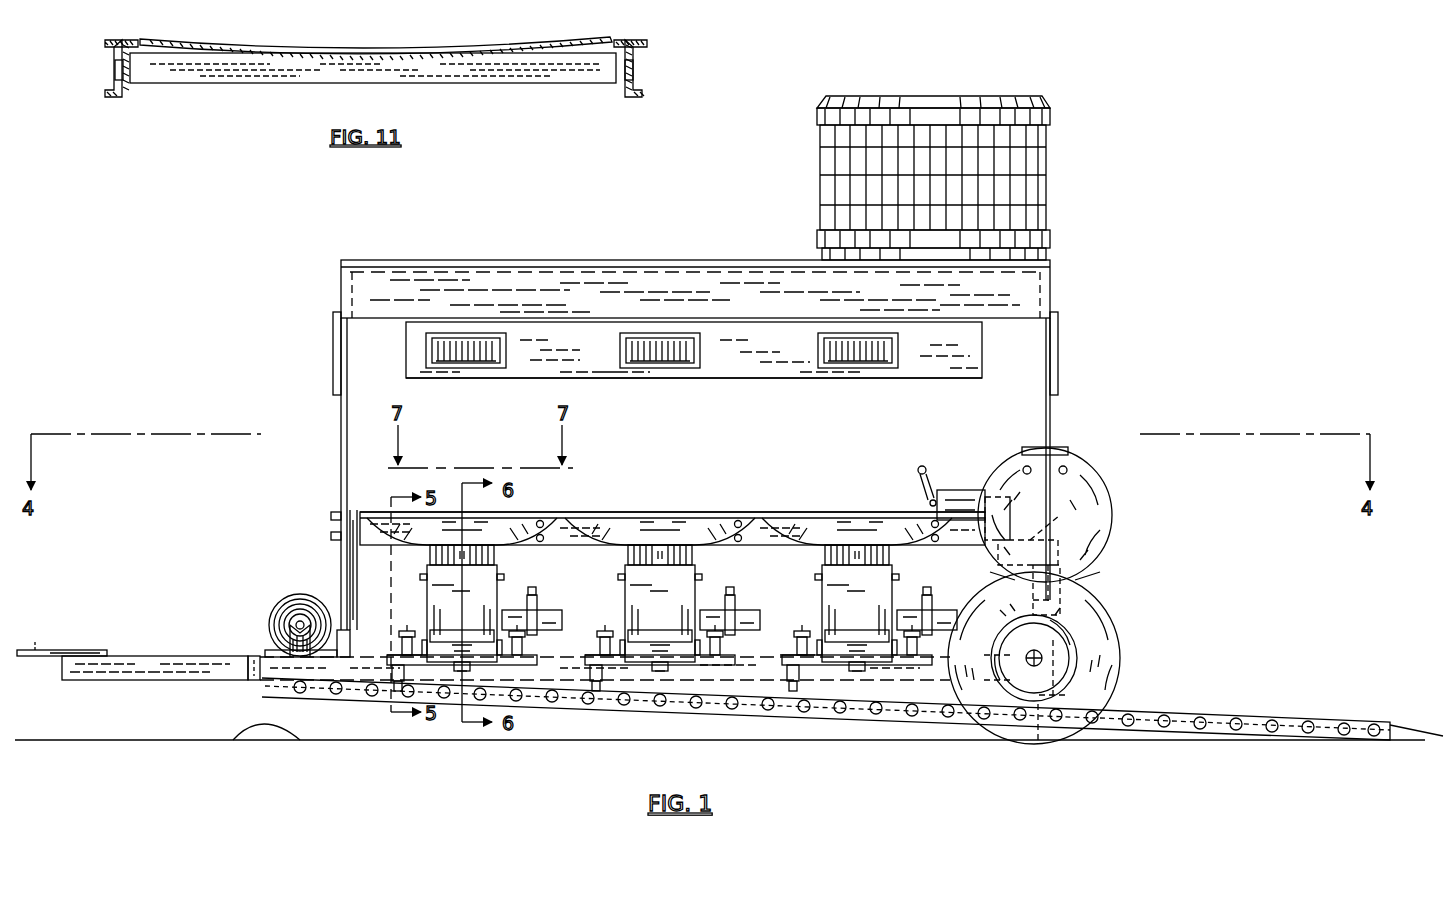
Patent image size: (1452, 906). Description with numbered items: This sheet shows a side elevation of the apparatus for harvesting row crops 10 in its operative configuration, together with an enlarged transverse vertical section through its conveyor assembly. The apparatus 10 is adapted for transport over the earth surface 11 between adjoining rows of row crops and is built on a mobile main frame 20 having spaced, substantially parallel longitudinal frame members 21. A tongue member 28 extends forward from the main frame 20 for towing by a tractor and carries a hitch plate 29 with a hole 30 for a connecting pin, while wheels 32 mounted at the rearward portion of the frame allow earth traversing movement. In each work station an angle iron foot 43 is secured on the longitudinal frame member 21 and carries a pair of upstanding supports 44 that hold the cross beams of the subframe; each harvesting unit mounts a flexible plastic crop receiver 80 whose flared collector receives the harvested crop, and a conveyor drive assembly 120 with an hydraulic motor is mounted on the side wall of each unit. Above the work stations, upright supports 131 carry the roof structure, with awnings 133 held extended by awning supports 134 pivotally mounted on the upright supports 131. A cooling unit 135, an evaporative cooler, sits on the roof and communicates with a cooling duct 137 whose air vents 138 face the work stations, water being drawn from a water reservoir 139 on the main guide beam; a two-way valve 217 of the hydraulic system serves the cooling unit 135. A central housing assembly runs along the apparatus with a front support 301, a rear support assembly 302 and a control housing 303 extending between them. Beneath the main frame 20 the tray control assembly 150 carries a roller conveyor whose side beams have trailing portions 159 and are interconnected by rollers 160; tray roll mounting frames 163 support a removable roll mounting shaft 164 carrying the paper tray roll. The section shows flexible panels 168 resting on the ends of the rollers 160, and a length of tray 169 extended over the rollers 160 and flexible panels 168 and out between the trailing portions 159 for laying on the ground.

In FIG. 1, the apparatus for harvesting row crops 10 is at (1078, 262).
In FIG. 1, the earth surface 11 is at (1205, 688).
In FIG. 1, the mobile main frame 20 is at (250, 655).
In FIG. 1, the longitudinal frame members 21 is at (560, 660).
In FIG. 1, the tongue member 28 is at (207, 680).
In FIG. 1, the hitch plate 29 is at (88, 650).
In FIG. 1, the hole 30 is at (35, 650).
In FIG. 1, the wheels 32 is at (1110, 628).
In FIG. 1, the angle iron foot 43 is at (400, 655).
In FIG. 1, the supports 44 is at (410, 645).
In FIG. 1, the crop receiver 80 is at (505, 520).
In FIG. 1, the conveyor drive assembly 120 is at (540, 607).
In FIG. 1, the upright supports 131 is at (341, 468).
In FIG. 1, the awnings 133 is at (695, 289).
In FIG. 1, the awning supports 134 is at (333, 350).
In FIG. 1, the cooling unit 135 is at (1052, 112).
In FIG. 1, the cooling duct 137 is at (758, 356).
In FIG. 1, the air vents 138 is at (466, 368).
In FIG. 1, the water reservoir 139 is at (1112, 485).
In FIG. 1, the tray control assembly 150 is at (1272, 705).
In FIG. 11, the trailing portions 159 is at (118, 97).
In FIG. 11, the rollers 160 is at (302, 65).
In FIG. 1, the tray roll mounting frames 163 is at (295, 640).
In FIG. 1, the roll mounting shaft 164 is at (300, 620).
In FIG. 11, the flexible panels 168 is at (134, 38).
In FIG. 11, the tray 169 is at (368, 50).
In FIG. 1, the two-way valve 217 is at (972, 490).
In FIG. 1, the front support 301 is at (351, 575).
In FIG. 1, the rear support assembly 302 is at (1045, 532).
In FIG. 1, the control housing 303 is at (678, 512).